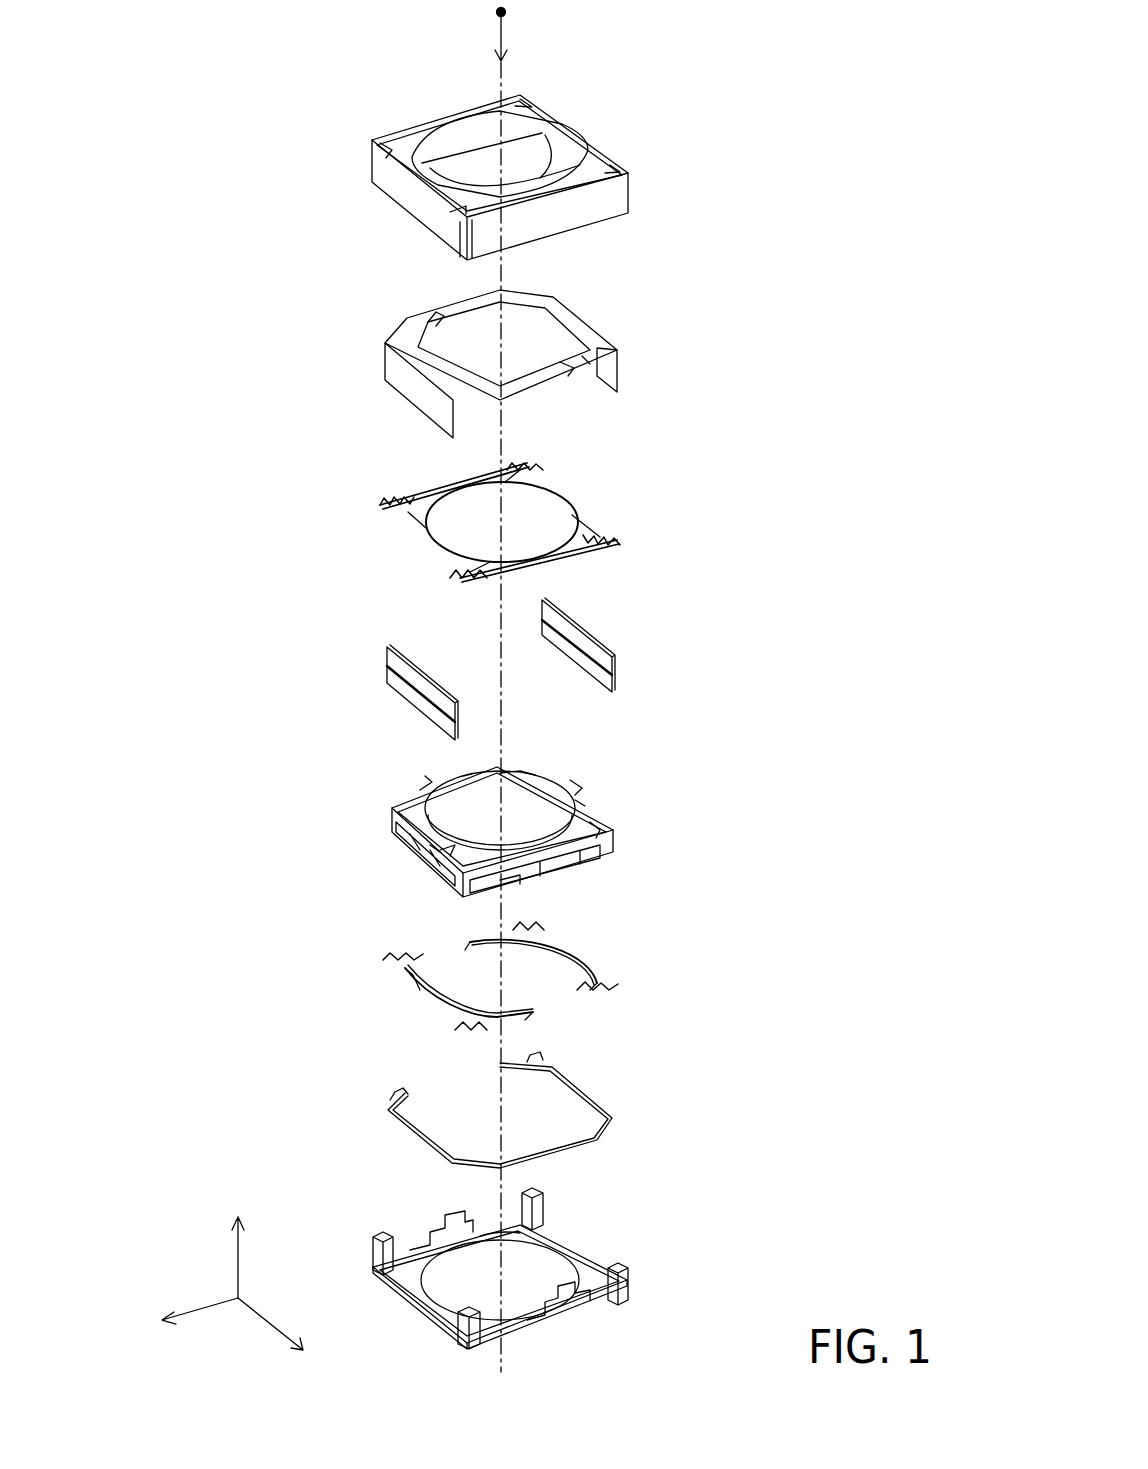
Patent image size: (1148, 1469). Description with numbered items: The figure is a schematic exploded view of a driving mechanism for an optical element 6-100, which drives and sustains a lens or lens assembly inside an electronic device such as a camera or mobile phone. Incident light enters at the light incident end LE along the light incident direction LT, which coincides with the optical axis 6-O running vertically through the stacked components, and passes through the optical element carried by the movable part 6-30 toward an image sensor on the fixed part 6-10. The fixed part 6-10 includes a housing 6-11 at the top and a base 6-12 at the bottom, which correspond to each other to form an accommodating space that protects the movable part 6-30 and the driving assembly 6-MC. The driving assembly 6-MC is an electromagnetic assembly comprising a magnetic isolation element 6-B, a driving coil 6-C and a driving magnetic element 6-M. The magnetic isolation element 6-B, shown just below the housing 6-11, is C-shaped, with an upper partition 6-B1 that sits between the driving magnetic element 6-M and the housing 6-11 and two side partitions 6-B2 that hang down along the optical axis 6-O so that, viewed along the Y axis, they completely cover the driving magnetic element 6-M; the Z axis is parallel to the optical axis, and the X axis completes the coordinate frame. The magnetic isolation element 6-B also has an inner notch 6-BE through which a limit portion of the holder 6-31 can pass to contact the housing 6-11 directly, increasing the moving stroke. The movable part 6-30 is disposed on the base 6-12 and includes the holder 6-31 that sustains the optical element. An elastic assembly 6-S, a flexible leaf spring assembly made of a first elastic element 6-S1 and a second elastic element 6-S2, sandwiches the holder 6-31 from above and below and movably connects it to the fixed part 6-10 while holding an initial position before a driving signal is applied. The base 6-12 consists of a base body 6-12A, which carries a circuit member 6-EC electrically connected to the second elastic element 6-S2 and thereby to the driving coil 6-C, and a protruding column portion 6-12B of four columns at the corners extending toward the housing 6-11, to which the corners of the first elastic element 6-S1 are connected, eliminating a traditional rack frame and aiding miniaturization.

The driving mechanism for an optical element 6-100 is at (252, 28).
The light incident end LE is at (496, 12).
The light incident direction LT is at (525, 39).
The optical axis 6-O is at (502, 78).
The housing 6-11 is at (630, 190).
The magnetic isolation element 6-B is at (669, 335).
The upper partition 6-B1 is at (430, 314).
The side partition 6-B2 is at (610, 368).
The inner notch 6-BE is at (573, 370).
The first elastic element 6-S1 is at (613, 530).
The driving assembly 6-MC is at (177, 512).
The driving magnetic element 6-M is at (668, 650).
The driving coil 6-C is at (583, 800).
The fixed part 6-10 is at (177, 617).
The base 6-12 is at (666, 1263).
The elastic assembly 6-S is at (177, 722).
The second elastic element 6-S2 is at (615, 990).
The holder 6-31 is at (520, 770).
The movable part 6-30 is at (668, 836).
The circuit member 6-EC is at (583, 1092).
The base body 6-12A is at (540, 1242).
The protruding column portion 6-12B is at (630, 1285).
The X axis X is at (282, 1333).
The Y axis Y is at (188, 1318).
The Z axis Z is at (239, 1243).